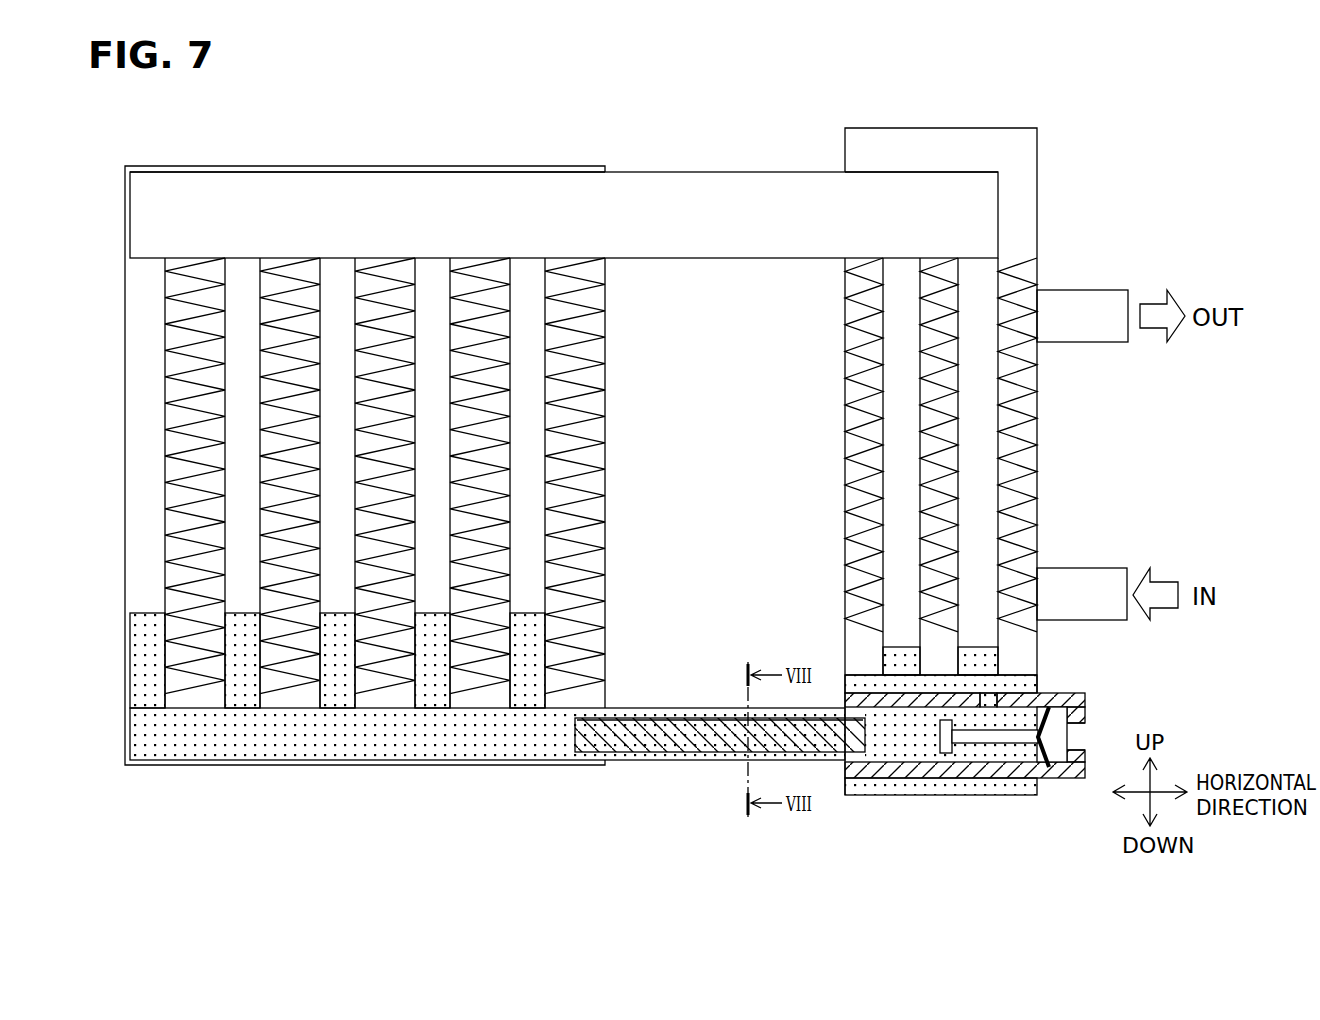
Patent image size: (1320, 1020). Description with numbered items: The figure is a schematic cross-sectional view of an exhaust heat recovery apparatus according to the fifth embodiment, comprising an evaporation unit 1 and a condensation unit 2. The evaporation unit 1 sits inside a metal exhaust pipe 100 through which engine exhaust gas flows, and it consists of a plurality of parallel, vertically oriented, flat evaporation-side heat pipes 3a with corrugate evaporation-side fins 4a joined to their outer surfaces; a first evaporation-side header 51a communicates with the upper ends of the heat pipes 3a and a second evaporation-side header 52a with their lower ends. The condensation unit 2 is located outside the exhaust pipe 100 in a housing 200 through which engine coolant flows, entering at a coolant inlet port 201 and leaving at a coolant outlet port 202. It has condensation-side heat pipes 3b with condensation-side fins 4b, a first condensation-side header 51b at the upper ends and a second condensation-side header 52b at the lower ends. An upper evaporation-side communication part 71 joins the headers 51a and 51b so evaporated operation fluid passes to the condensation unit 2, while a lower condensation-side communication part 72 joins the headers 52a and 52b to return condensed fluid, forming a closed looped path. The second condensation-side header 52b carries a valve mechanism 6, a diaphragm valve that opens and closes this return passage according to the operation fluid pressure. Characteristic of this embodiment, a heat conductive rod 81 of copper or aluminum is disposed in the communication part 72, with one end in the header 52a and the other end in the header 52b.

The exhaust pipe 100 is at (168, 166).
The evaporation unit 1 is at (219, 258).
The condensation unit 2 is at (878, 259).
The evaporation-side heat pipes 3a is at (410, 268).
The evaporation-side fins 4a is at (470, 268).
The condensation-side heat pipes 3b is at (1005, 402).
The condensation-side fins 4b is at (1030, 452).
The first evaporation-side header 51a is at (537, 195).
The first condensation-side header 51b is at (935, 195).
The second evaporation-side header 52a is at (277, 742).
The second condensation-side header 52b is at (900, 795).
The evaporation-side communication part 71 is at (665, 205).
The condensation-side communication part 72 is at (685, 752).
The rod 81 is at (685, 720).
The valve mechanism 6 is at (1005, 757).
The housing 200 is at (1037, 128).
The coolant inlet port 201 is at (1102, 606).
The coolant outlet port 202 is at (1080, 310).